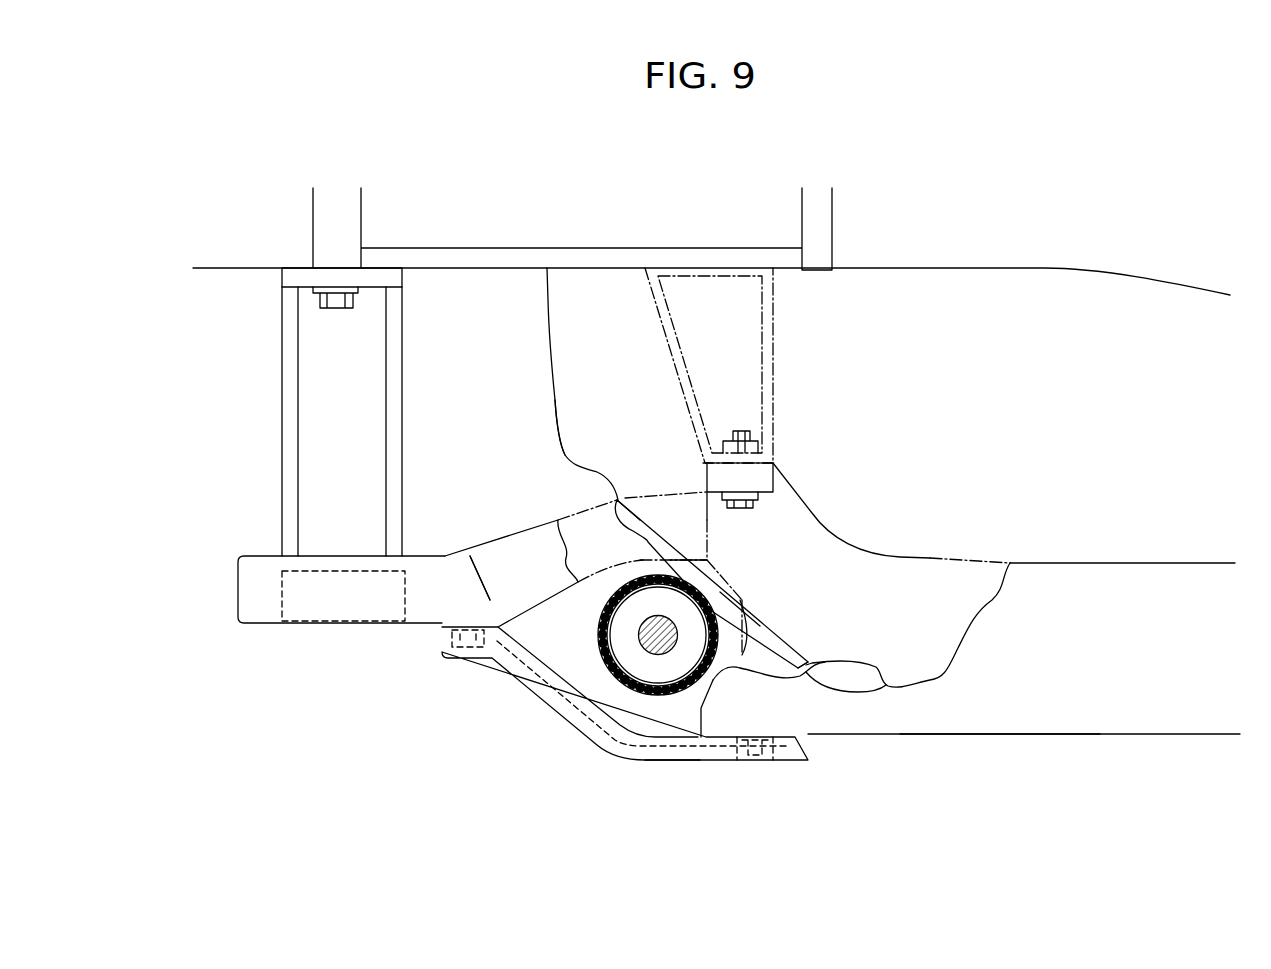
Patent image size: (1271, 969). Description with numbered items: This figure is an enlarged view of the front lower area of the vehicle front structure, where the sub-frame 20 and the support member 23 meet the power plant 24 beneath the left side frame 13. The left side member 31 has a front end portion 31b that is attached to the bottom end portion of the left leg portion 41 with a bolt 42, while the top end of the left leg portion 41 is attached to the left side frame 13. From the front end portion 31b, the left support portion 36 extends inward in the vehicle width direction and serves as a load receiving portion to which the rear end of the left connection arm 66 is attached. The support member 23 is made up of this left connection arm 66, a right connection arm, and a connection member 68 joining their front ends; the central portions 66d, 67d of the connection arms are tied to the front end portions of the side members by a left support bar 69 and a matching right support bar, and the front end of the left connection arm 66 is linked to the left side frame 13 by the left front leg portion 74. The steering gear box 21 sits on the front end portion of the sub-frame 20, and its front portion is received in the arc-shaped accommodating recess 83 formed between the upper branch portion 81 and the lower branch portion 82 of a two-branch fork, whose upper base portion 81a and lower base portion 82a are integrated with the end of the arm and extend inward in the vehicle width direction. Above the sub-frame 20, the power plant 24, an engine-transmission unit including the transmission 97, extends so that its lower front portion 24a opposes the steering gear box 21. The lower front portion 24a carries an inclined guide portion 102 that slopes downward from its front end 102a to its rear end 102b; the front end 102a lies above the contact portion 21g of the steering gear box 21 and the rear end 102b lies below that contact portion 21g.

The left side frame 13 is at (616, 215).
The sub-frame 20 is at (1022, 742).
The steering gear box 21 is at (607, 663).
The contact portion 21g is at (727, 590).
The support member 23 is at (228, 588).
The power plant 24 is at (546, 317).
The lower front portion 24a is at (693, 538).
The left side member 31 is at (1155, 688).
The front end portion 31b is at (775, 478).
The left support portion 36 is at (706, 480).
The left leg portion 41 is at (775, 360).
The bolt 42 is at (760, 503).
The left connection arm 66 is at (427, 605).
The central portion 66d is at (466, 590).
The central portion 67d is at (465, 516).
The connection member 68 is at (282, 593).
The left support bar 69 is at (605, 737).
The left front leg portion 74 is at (288, 400).
The upper branch portion 81 is at (706, 522).
The upper base portion 81a is at (715, 628).
The lower branch portion 82 is at (698, 715).
The lower base portion 82a is at (717, 647).
The accommodating recess 83 is at (707, 682).
The transmission 97 is at (567, 377).
The inclined guide portion 102 is at (650, 530).
The front end 102a is at (618, 502).
The rear end 102b is at (817, 658).